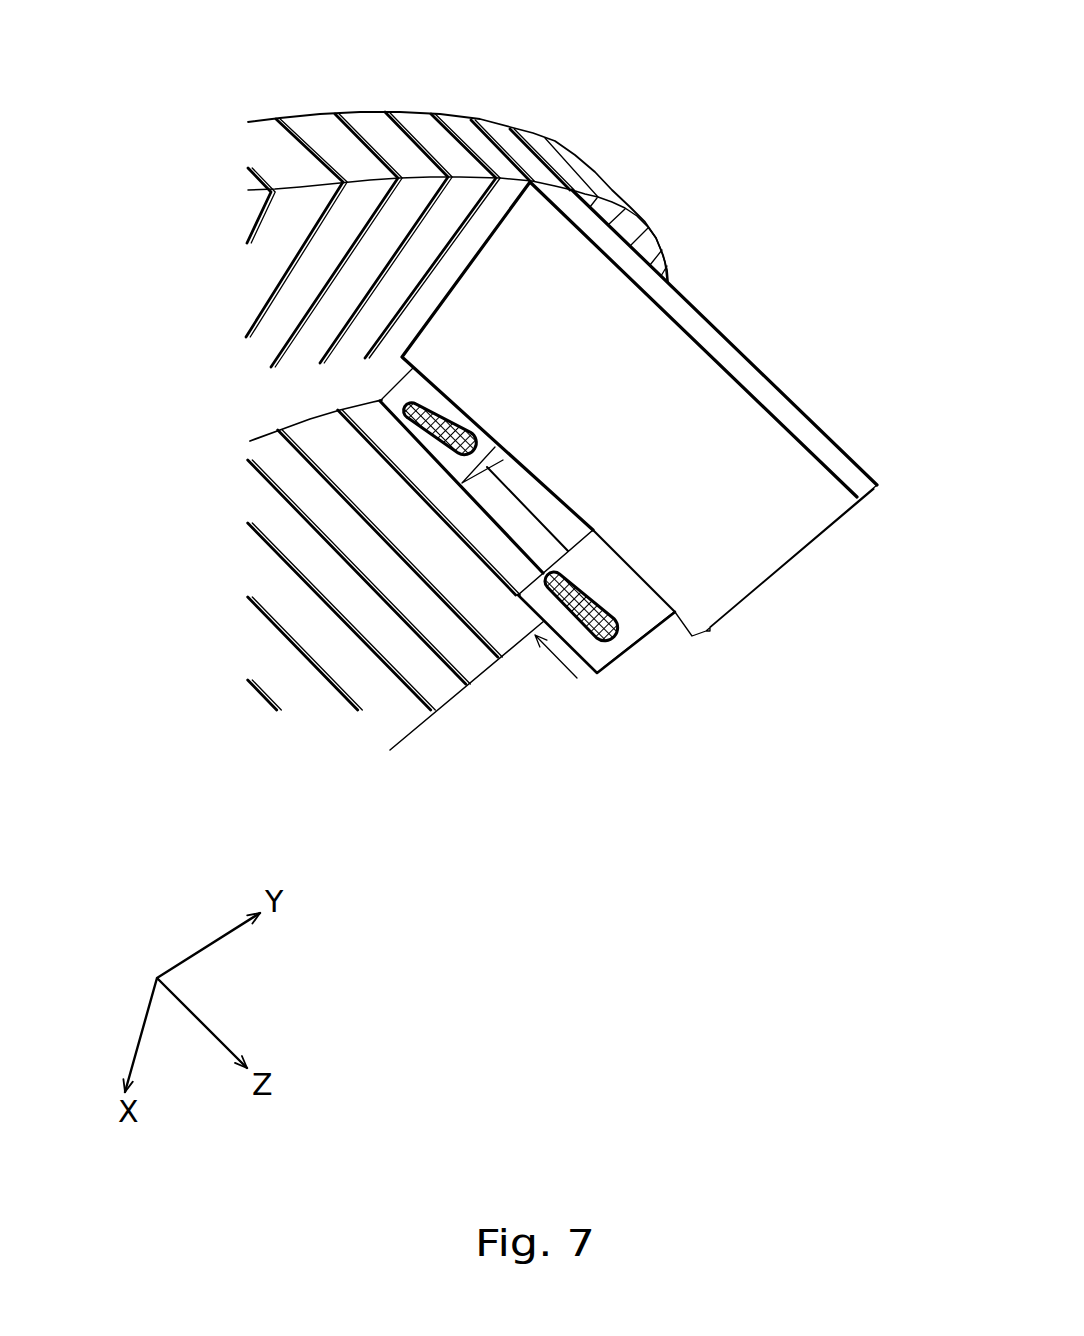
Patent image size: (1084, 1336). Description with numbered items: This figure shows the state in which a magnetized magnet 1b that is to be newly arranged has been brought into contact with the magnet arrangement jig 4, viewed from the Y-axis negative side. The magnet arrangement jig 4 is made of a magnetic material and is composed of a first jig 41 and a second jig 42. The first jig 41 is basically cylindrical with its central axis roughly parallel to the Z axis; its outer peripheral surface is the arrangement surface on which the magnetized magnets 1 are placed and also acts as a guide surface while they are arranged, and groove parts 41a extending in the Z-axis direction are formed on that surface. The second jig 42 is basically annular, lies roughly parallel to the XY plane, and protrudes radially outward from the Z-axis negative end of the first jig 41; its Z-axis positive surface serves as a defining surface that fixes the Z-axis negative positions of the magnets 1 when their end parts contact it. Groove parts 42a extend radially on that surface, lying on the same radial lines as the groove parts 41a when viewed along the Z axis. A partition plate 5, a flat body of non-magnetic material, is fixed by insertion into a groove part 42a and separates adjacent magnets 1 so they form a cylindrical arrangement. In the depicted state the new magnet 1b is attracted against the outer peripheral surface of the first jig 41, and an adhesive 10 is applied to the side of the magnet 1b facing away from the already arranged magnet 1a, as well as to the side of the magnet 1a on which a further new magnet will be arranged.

The magnetized magnet 1 is at (618, 465).
The already arranged magnetized magnet 1a is at (427, 396).
The magnetized magnet to be newly arranged 1b is at (628, 636).
The magnet arrangement jig 4 is at (457, 411).
The partition plate 5 is at (773, 547).
The adhesive 10 is at (462, 424).
The first jig 41 is at (408, 607).
The groove part 41a is at (423, 700).
The second jig 42 is at (457, 187).
The groove part 42a is at (337, 265).